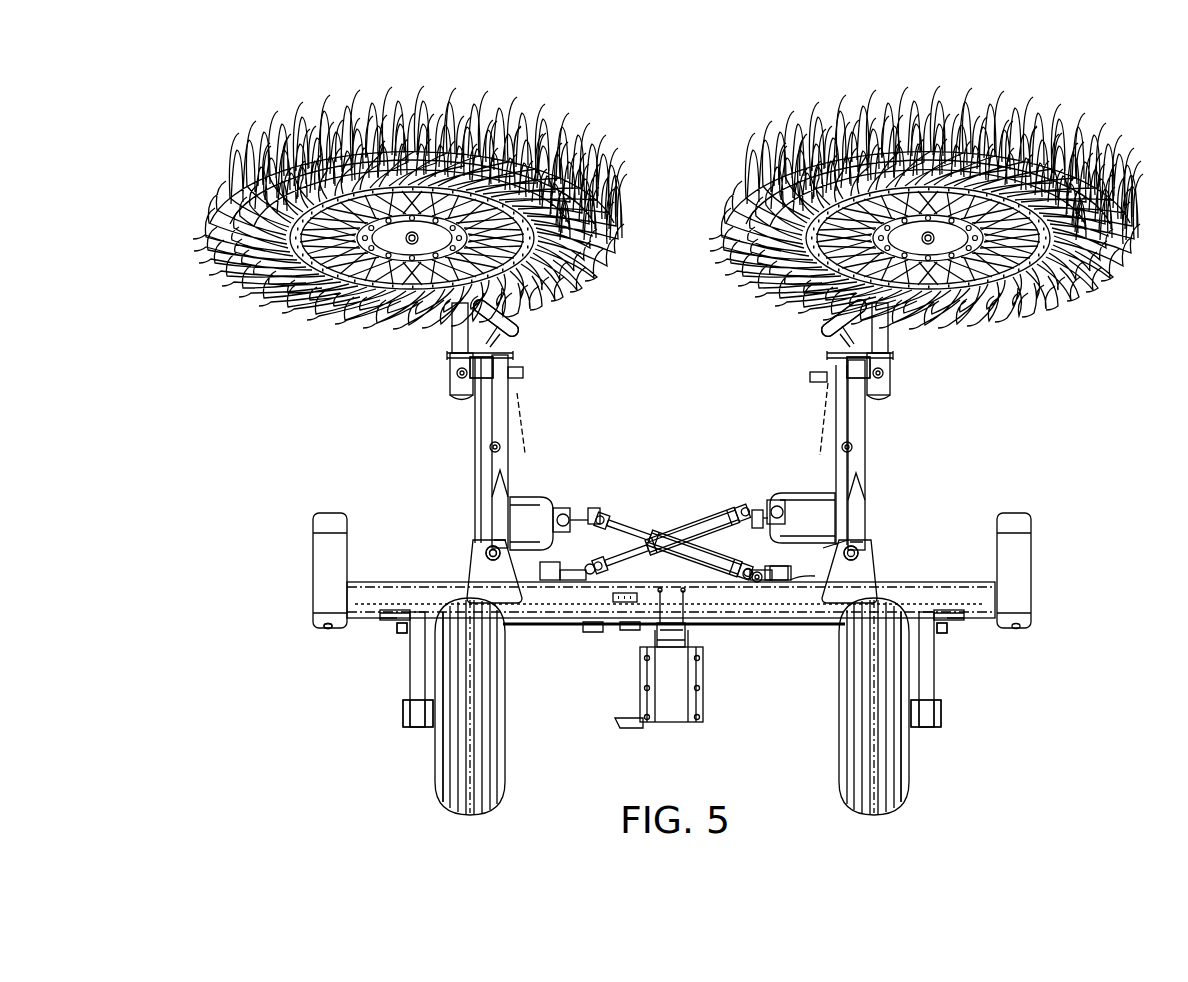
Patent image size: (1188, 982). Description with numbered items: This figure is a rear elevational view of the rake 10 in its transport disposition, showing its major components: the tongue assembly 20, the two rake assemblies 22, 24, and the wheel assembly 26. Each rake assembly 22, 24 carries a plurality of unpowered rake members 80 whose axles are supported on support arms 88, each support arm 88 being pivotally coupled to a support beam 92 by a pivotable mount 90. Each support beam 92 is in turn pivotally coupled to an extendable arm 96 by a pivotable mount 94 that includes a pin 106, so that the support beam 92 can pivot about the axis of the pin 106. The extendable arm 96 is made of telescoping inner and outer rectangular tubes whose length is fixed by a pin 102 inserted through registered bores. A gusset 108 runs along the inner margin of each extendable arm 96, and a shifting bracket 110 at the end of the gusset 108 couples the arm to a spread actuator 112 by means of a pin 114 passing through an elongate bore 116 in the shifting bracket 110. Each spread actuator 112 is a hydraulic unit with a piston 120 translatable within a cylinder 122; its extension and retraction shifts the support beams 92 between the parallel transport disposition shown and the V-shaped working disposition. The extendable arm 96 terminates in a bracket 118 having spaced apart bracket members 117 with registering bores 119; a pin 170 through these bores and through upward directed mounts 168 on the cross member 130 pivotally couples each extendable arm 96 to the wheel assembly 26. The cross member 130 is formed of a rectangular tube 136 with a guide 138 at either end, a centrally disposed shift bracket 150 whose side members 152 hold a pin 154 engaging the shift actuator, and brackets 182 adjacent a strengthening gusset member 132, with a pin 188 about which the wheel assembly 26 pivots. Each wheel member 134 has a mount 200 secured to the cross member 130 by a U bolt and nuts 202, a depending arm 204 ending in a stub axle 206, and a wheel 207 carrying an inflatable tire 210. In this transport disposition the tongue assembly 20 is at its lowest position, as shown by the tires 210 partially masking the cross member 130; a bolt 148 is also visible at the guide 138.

The rake 10 is at (377, 197).
The tongue assembly 20 is at (661, 687).
The rake assembly 22 is at (256, 104).
The rake assembly 24 is at (763, 106).
The wheel assembly 26 is at (670, 576).
The rake member 80 is at (305, 275).
The support arm 88 is at (514, 327).
The pivotable mount 90 is at (666, 357).
The support beam 92 is at (487, 368).
The pivotable mount 94 is at (503, 370).
The extendable arm 96 is at (477, 417).
The pin 102 is at (490, 447).
The pin 106 is at (522, 378).
The gusset 108 is at (522, 427).
The shifting bracket 110 is at (672, 500).
The spread actuator 112 is at (672, 574).
The pin 114 is at (565, 514).
The elongate bore 116 is at (596, 518).
The bracket member 117 is at (832, 568).
The bracket 118 is at (485, 552).
The bore 119 is at (870, 560).
The piston 120 is at (590, 574).
The cylinder 122 is at (708, 548).
The cross member 130 is at (495, 612).
The strengthening gusset member 132 is at (796, 584).
The wheel member 134 is at (665, 715).
The tube 136 is at (370, 618).
The guide 138 is at (672, 589).
The bolt 148 is at (326, 630).
The shift bracket 150 is at (655, 640).
The side member 152 is at (650, 645).
The pin 154 is at (700, 640).
The mount 168 is at (675, 559).
The pin 170 is at (487, 555).
The bracket 182 is at (557, 585).
The pin 188 is at (600, 575).
The mount 200 is at (403, 607).
The U bolt and nuts 202 is at (403, 633).
The depending arm 204 is at (672, 653).
The stub axle 206 is at (423, 715).
The wheel 207 is at (480, 782).
The inflatable tire 210 is at (460, 795).